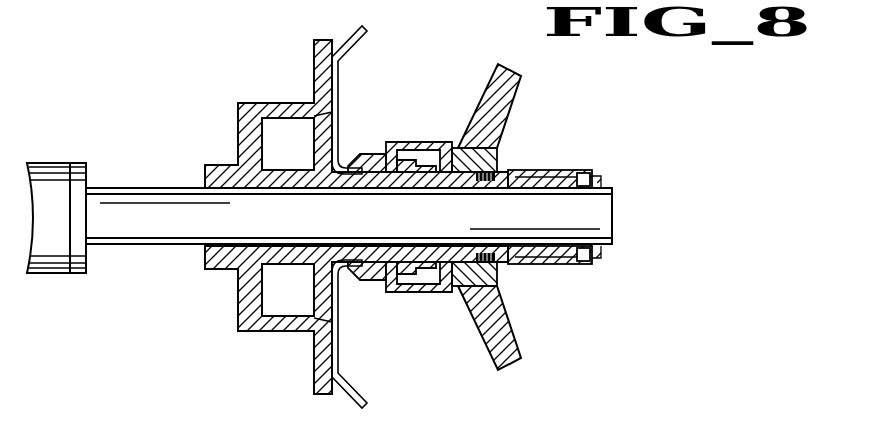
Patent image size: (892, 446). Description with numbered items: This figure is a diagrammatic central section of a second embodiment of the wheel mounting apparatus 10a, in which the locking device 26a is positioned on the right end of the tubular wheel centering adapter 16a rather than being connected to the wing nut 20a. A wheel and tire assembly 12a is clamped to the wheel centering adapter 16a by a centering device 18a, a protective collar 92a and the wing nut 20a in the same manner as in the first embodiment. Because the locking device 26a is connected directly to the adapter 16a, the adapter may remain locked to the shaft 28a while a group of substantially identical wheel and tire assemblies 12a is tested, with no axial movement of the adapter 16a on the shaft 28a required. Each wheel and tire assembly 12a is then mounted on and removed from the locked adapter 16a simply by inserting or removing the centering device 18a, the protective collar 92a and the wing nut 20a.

The wheel mounting apparatus 10a is at (228, 72).
The wheel and tire assembly 12a is at (347, 31).
The wheel centering adapter 16a is at (232, 126).
The wheel centering device 18a is at (376, 152).
The protective collar 92a is at (431, 141).
The wing nut 20a is at (492, 150).
The locking device 26a is at (582, 173).
The shaft 28a is at (604, 217).